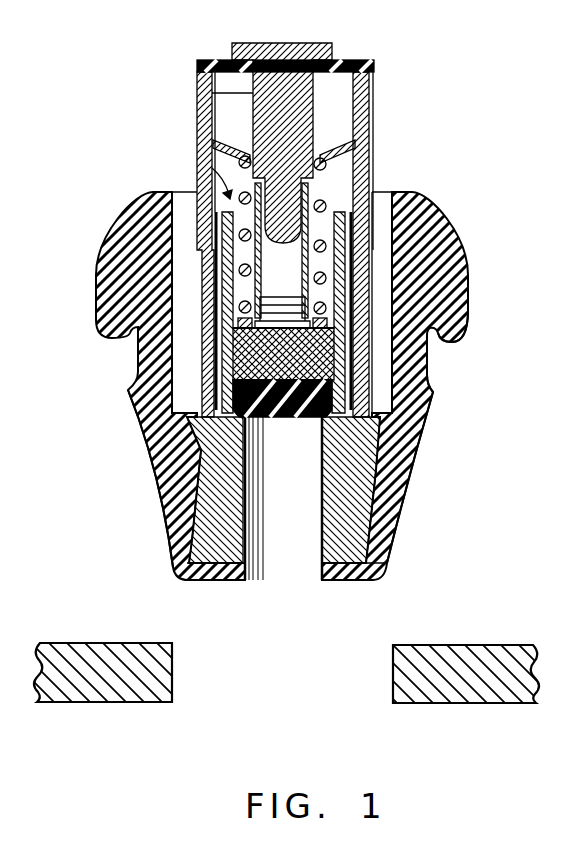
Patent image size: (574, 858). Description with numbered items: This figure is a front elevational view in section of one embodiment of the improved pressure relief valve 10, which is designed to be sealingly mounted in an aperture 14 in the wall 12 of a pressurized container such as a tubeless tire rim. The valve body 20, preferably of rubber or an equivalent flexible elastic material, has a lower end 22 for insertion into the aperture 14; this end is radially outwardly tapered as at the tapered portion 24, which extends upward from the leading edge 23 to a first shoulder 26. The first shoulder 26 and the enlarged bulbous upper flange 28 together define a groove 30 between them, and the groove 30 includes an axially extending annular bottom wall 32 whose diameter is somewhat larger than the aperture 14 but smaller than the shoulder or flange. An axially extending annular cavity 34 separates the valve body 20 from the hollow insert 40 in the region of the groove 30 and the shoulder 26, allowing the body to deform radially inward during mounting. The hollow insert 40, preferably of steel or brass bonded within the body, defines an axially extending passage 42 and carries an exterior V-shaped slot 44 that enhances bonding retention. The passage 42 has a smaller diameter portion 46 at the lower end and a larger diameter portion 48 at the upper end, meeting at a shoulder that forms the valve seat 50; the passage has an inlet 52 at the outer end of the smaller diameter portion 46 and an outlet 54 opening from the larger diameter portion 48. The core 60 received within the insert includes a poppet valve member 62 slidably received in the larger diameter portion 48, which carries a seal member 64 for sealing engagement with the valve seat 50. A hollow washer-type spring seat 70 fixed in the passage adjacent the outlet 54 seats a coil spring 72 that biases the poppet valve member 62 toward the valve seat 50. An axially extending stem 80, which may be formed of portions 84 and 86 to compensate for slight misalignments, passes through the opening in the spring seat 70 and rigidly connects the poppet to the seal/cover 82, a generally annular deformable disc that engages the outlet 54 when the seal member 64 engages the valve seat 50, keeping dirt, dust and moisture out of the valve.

The pressure relief valve 10 is at (464, 196).
The wall 12 is at (457, 660).
The aperture 14 is at (284, 675).
The valve body 20 is at (90, 283).
The lower end 22 is at (398, 526).
The leading edge 23 is at (353, 583).
The tapered portion 24 is at (407, 468).
The first shoulder 26 is at (434, 399).
The upper flange 28 is at (467, 333).
The groove 30 is at (437, 361).
The bottom wall 32 is at (133, 366).
The annular cavity 34 is at (383, 212).
The hollow insert 40 is at (383, 297).
The passage 42 is at (217, 128).
The V-shaped slot 44 is at (223, 493).
The smaller diameter portion 46 is at (264, 519).
The larger diameter portion 48 is at (222, 366).
The valve seat 50 is at (245, 443).
The inlet 52 is at (299, 572).
The outlet 54 is at (345, 90).
The core 60 is at (212, 168).
The poppet valve member 62 is at (240, 353).
The seal member 64 is at (271, 419).
The spring seat 70 is at (342, 146).
The coil spring 72 is at (337, 250).
The stem 80 is at (330, 112).
The seal/cover 82 is at (220, 60).
The stem portion 84 is at (200, 93).
The stem portion 86 is at (277, 257).